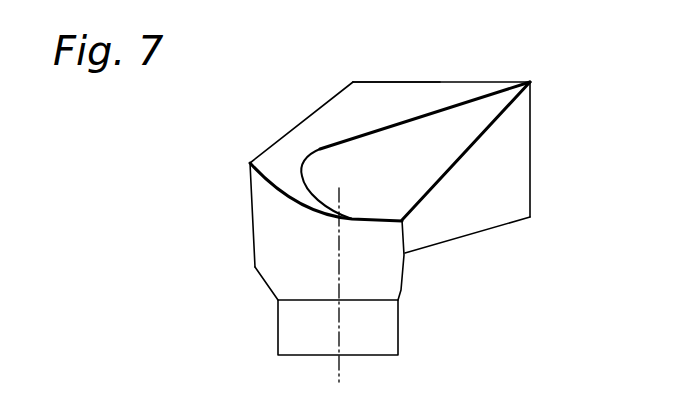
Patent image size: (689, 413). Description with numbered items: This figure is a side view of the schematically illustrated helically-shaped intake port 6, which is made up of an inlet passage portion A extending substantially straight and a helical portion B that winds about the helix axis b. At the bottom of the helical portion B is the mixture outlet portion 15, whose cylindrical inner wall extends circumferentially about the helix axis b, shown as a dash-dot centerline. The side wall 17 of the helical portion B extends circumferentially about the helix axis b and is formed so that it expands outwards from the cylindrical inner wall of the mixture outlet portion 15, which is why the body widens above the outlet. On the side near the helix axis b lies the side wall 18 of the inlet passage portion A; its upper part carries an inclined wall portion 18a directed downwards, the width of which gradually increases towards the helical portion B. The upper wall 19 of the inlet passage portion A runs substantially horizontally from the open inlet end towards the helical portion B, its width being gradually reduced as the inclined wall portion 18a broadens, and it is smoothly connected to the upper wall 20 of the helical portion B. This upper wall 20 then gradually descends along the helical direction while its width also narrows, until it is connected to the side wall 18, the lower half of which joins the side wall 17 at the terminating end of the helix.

The helically-shaped intake port 6 is at (547, 148).
The mixture outlet portion 15 is at (380, 323).
The side wall of the helical portion 17 is at (262, 253).
The side wall of the inlet passage portion 18 is at (493, 210).
The inclined wall portion 18a is at (425, 128).
The upper wall of the inlet passage portion 19 is at (373, 102).
The upper wall of the helical portion 20 is at (275, 178).
The inlet passage portion A is at (342, 93).
The helical portion B is at (242, 217).
The helix axis b is at (338, 372).